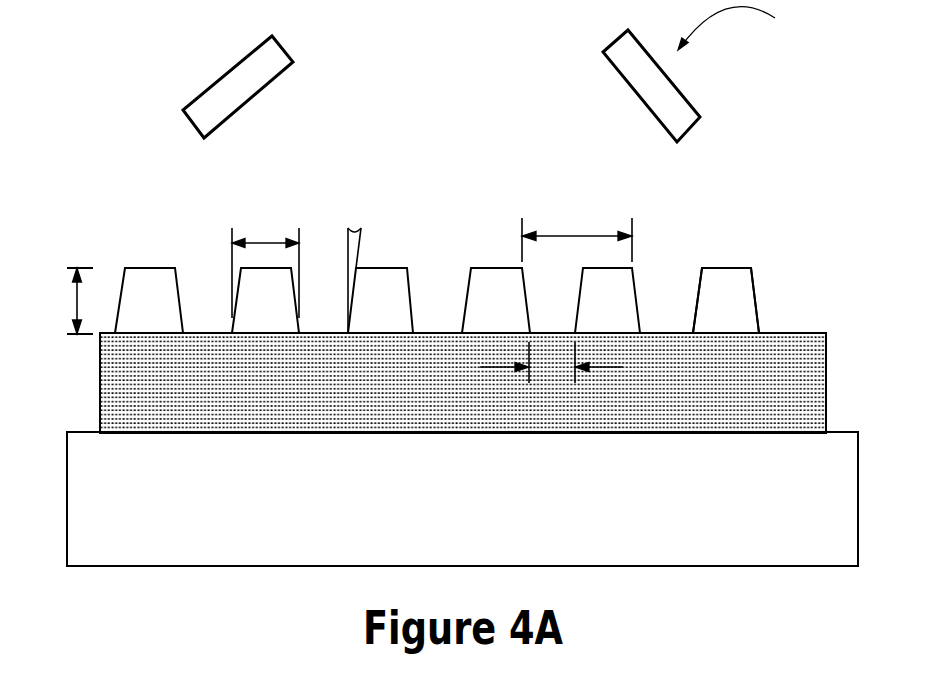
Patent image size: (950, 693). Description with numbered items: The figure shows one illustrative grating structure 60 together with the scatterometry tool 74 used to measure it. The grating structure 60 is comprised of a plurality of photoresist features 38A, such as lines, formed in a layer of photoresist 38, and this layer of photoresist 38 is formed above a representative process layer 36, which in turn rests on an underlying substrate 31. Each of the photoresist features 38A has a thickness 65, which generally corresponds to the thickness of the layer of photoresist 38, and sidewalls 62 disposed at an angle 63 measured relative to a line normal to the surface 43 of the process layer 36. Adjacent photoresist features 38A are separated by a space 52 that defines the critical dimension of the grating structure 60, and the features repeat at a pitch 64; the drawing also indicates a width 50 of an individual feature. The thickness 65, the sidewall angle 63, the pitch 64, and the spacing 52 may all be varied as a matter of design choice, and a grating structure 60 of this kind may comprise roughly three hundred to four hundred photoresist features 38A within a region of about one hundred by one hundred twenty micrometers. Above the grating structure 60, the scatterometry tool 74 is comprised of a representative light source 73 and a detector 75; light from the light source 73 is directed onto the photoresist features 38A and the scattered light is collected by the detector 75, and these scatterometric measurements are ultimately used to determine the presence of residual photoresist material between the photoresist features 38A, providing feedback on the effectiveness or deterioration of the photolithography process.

The substrate 31 is at (159, 548).
The process layer 36 is at (117, 393).
The layer of photoresist 38 is at (762, 302).
The photoresist features 38A is at (150, 287).
The surface of the process layer 43 is at (792, 333).
The feature width 50 is at (268, 242).
The space 52 is at (612, 367).
The grating structure 60 is at (677, 217).
The sidewalls 62 is at (637, 293).
The sidewall angle 63 is at (352, 232).
The pitch 64 is at (570, 232).
The thickness 65 is at (75, 297).
The light source 73 is at (212, 115).
The scatterometry tool 74 is at (752, 32).
The detector 75 is at (682, 110).